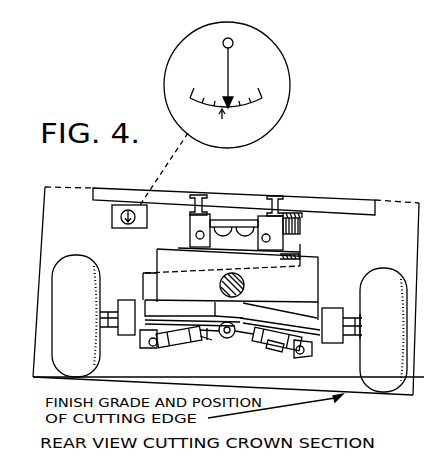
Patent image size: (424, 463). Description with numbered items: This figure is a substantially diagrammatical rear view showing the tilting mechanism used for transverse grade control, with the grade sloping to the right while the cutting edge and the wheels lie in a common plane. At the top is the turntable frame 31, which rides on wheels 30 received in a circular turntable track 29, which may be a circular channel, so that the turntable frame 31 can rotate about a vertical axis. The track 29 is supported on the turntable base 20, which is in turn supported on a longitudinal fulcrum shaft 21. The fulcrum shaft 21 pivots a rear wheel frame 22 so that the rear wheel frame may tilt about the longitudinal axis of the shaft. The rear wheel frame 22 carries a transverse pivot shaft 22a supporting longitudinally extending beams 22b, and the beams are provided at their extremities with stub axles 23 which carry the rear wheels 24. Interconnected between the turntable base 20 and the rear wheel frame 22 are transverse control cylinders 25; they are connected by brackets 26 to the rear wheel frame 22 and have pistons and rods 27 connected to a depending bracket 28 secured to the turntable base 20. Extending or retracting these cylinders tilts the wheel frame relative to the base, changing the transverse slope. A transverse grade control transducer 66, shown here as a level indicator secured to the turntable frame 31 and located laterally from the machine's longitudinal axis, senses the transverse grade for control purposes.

The turntable base 20 is at (305, 274).
The fulcrum shaft 21 is at (219, 285).
The rear wheel frame 22 is at (143, 272).
The transverse pivot shaft 22a is at (277, 346).
The beams 22b is at (132, 289).
The stub axles 23 is at (110, 328).
The rear wheels 24 is at (72, 262).
The transverse control cylinders 25 is at (168, 348).
The brackets 26 is at (146, 336).
The pistons and rods 27 is at (207, 340).
The depending bracket 28 is at (227, 338).
The circular turntable track 29 is at (300, 236).
The wheels 30 is at (245, 206).
The turntable frame 31 is at (293, 203).
The transverse grade control transducer 66 is at (175, 52).